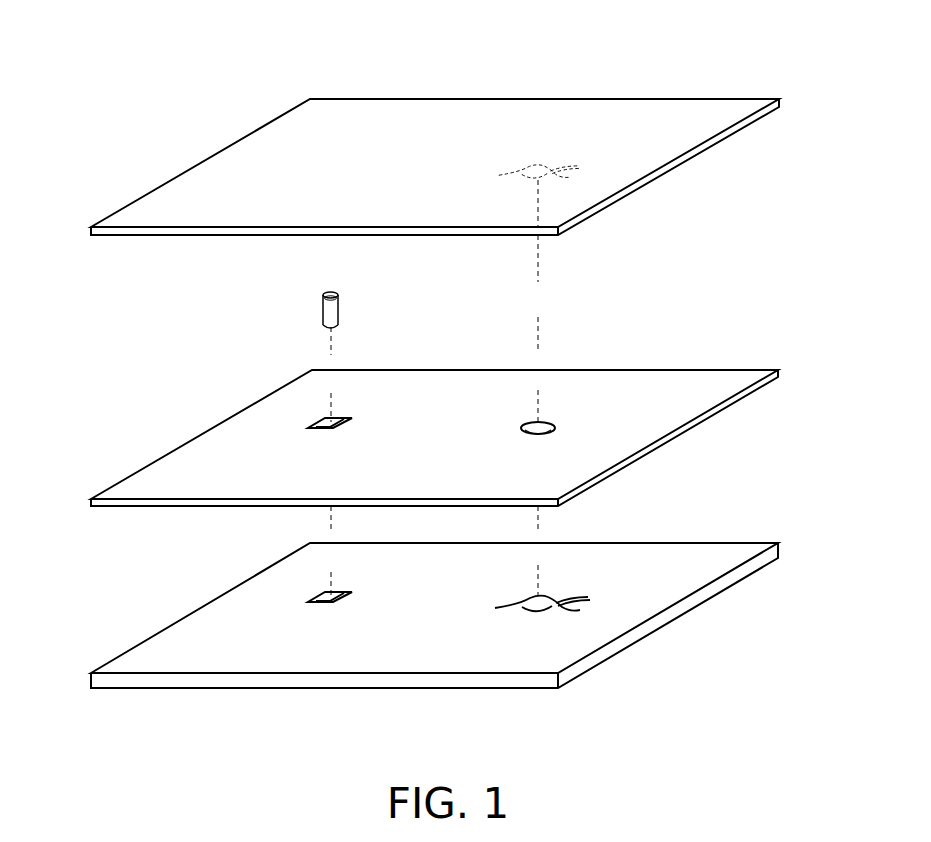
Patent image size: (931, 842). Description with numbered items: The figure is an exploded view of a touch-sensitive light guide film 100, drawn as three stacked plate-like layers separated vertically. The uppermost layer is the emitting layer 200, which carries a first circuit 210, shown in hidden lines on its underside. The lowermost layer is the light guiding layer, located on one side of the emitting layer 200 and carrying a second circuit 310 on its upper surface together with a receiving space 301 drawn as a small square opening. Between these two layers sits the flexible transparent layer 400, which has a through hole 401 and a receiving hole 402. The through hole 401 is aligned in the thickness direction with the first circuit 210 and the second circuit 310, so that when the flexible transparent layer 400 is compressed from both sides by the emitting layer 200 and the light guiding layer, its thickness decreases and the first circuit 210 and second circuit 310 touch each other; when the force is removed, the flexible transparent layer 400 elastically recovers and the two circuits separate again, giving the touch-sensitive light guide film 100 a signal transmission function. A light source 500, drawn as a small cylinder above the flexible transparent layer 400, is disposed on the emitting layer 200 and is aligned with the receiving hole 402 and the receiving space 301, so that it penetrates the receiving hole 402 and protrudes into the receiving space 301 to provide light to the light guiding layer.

The touch-sensitive light guide film 100 is at (56, 43).
The emitting layer 200 is at (457, 108).
The first circuit 210 is at (540, 170).
The flexible transparent layer 400 is at (662, 385).
The through hole 401 is at (556, 427).
The receiving hole 402 is at (320, 425).
The light source 500 is at (320, 308).
The receiving space 301 is at (313, 597).
The second circuit 310 is at (538, 613).